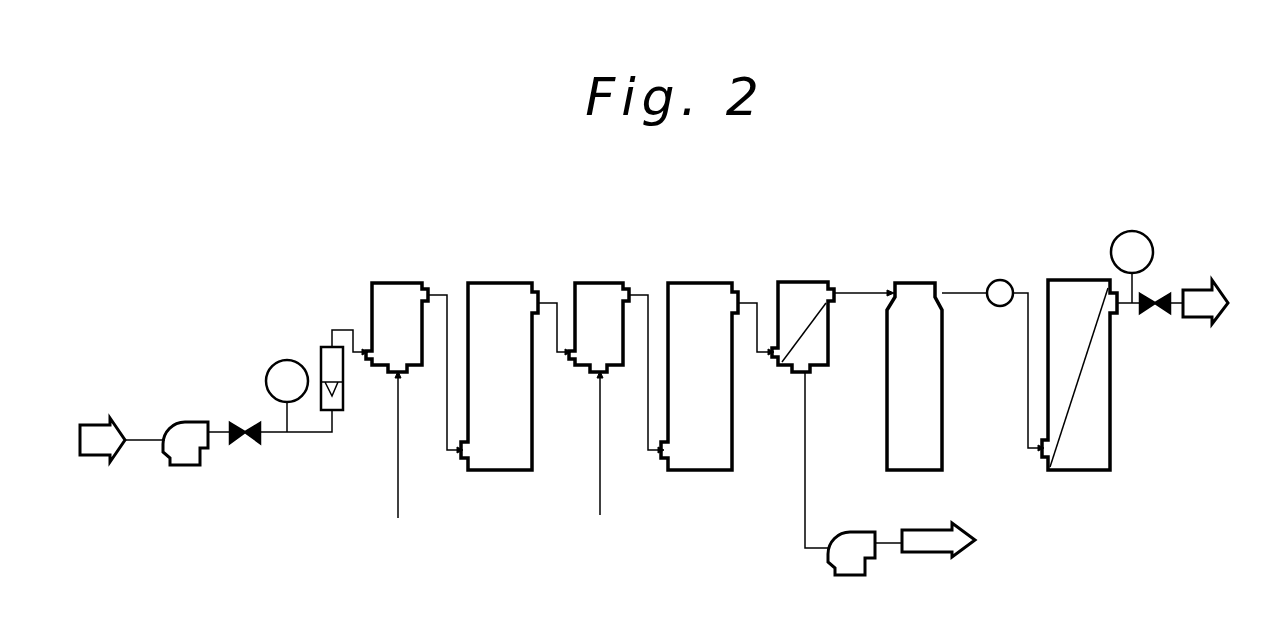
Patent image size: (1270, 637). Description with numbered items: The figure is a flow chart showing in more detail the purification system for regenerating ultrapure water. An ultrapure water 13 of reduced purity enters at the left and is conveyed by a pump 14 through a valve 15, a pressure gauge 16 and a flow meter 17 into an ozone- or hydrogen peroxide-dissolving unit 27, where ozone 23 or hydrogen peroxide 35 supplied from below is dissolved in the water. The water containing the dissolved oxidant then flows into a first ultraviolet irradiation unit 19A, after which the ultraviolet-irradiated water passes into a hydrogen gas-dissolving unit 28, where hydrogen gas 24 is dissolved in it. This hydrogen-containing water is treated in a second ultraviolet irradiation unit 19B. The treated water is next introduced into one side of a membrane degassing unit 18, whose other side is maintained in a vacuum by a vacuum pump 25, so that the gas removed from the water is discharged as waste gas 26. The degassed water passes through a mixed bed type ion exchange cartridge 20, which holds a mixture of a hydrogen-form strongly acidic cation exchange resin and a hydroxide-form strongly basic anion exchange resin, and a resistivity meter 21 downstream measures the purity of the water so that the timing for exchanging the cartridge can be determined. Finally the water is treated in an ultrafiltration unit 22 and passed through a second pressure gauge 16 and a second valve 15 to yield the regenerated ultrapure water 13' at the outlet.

The ultrapure water of reduced purity 13 is at (118, 415).
The ultrapure water 13' is at (1213, 276).
The pump 14 is at (194, 421).
The valve 15 is at (242, 446).
The pressure gauge 16 is at (278, 360).
The flow meter 17 is at (323, 346).
The membrane degassing unit 18 is at (800, 282).
The ultraviolet irradiation unit 19A is at (516, 376).
The ultraviolet irradiation unit 19B is at (717, 376).
The mixed bed type ion exchange cartridge 20 is at (937, 376).
The resistivity meter 21 is at (1001, 280).
The ultrafiltration unit 22 is at (1112, 415).
The ozone 23 is at (414, 462).
The hydrogen peroxide 35 is at (414, 462).
The hydrogen gas 24 is at (603, 459).
The vacuum pump 25 is at (844, 576).
The waste gas 26 is at (930, 553).
The ozone- or hydrogen peroxide-dissolving unit 27 is at (403, 283).
The hydrogen gas-dissolving unit 28 is at (601, 283).